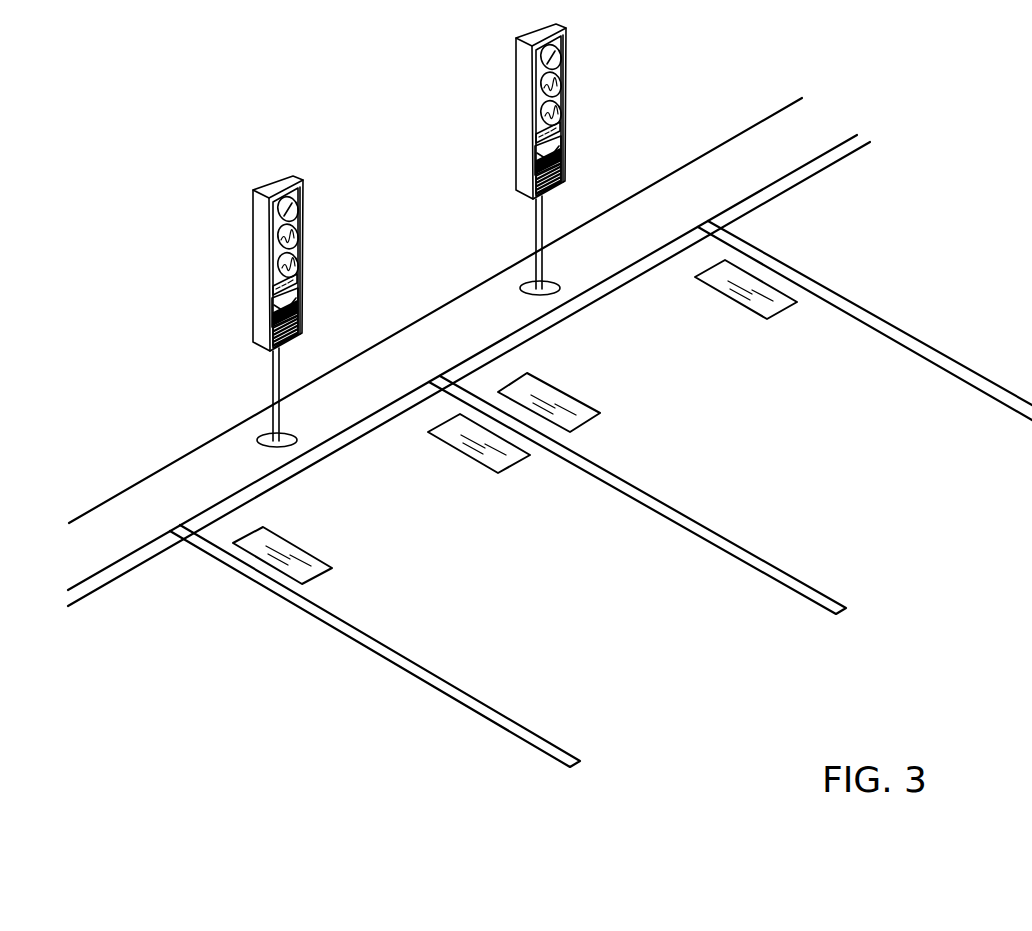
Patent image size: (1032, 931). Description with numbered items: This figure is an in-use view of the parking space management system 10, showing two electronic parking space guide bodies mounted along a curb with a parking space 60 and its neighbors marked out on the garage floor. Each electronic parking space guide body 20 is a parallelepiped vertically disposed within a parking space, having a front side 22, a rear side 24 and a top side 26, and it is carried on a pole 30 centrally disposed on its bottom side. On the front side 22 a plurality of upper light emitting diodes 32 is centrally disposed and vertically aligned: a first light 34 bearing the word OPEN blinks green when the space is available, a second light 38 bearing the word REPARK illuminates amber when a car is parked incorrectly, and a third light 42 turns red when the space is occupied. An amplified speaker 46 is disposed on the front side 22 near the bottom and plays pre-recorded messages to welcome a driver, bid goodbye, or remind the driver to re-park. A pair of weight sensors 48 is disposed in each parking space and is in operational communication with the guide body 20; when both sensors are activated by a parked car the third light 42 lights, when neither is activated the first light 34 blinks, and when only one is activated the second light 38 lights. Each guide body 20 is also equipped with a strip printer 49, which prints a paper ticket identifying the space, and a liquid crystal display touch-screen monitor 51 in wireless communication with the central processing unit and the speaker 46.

The parking space management system 10 is at (988, 527).
The electronic parking space guide body 20 is at (275, 187).
The front side 22 is at (270, 343).
The rear side 24 is at (252, 210).
The top side 26 is at (275, 187).
The pole 30 is at (273, 381).
The plurality of upper light emitting diodes 32 is at (273, 223).
The first light 34 is at (295, 272).
The second light 38 is at (285, 236).
The third light 42 is at (279, 204).
The amplified speaker 46 is at (300, 322).
The pair of weight sensors 48 is at (583, 420).
The strip printer 49 is at (300, 313).
The liquid crystal display touch-screen monitor 51 is at (276, 312).
The parking space 60 is at (723, 680).